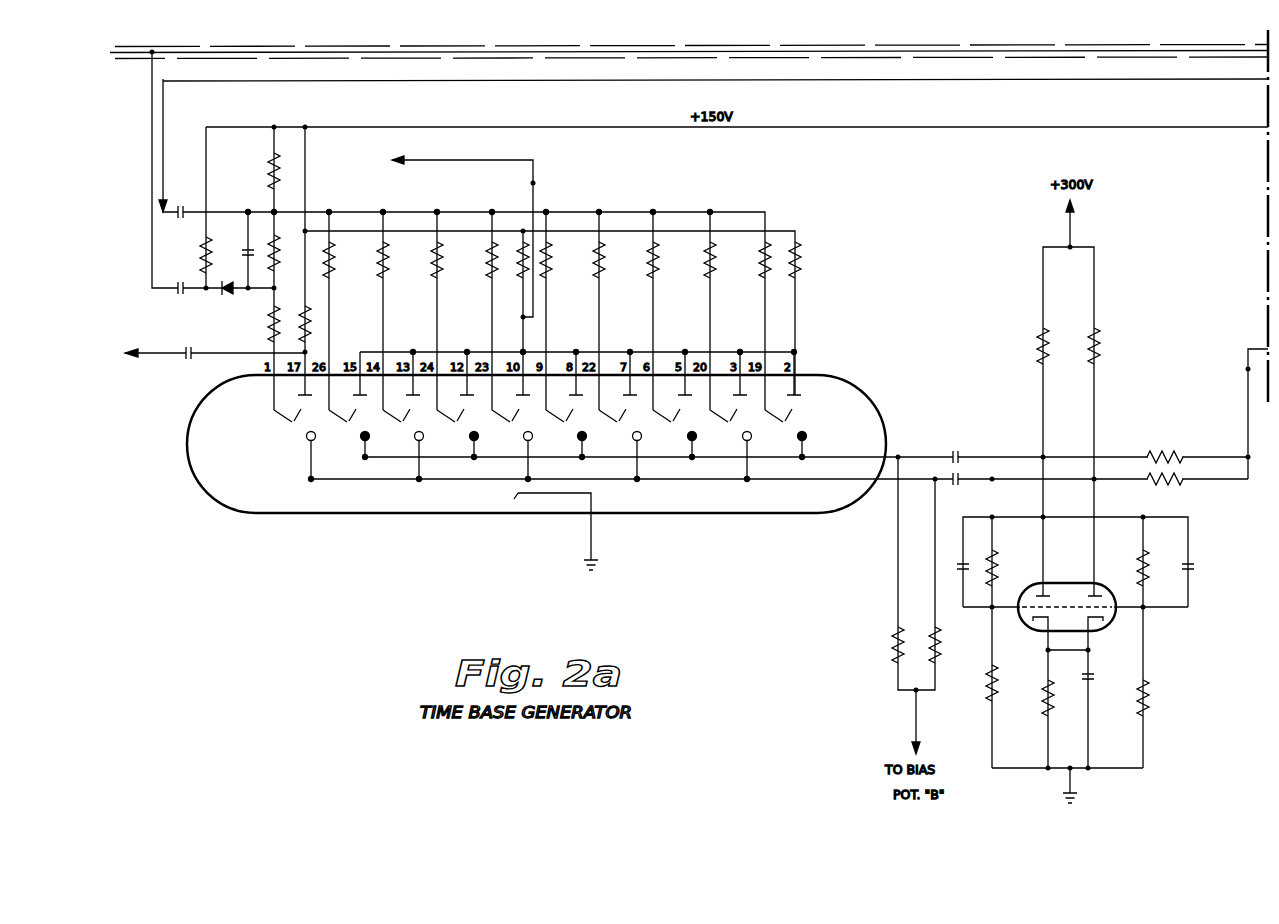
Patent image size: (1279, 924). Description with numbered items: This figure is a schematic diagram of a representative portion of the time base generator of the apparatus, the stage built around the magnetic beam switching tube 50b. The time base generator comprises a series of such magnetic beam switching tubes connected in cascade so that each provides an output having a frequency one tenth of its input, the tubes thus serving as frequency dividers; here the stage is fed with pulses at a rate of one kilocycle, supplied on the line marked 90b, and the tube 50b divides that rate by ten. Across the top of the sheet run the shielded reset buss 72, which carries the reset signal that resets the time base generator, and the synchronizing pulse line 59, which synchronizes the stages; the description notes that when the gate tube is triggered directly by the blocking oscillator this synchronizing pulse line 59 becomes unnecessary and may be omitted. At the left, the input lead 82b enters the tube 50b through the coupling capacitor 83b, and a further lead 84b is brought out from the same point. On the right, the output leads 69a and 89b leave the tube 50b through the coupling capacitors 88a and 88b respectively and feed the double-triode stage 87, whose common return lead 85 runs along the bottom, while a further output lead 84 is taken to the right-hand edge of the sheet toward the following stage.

The shielded reset buss 72 is at (1122, 50).
The synchronizing pulse line 59 is at (972, 79).
The 1 KC pulse line 90b is at (533, 183).
The output lead 84b is at (160, 353).
The coupling capacitor 83b is at (184, 360).
The input lead to decade counter tube 82b is at (243, 353).
The magnetic beam switching tube 50b is at (743, 504).
The output lead from counter tube 69a is at (928, 457).
The coupling capacitor 88a is at (958, 456).
The coupling capacitor 88b is at (962, 483).
The output lead from counter tube 89b is at (886, 482).
The output terminal lead 84 is at (1247, 369).
The double triode V106 (12AT7) flip-flop 87 is at (1033, 624).
The common cathode return lead 85 is at (998, 769).